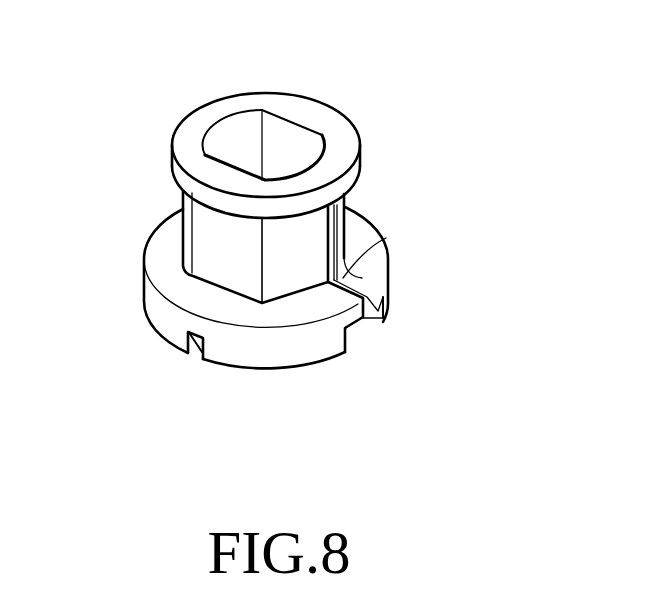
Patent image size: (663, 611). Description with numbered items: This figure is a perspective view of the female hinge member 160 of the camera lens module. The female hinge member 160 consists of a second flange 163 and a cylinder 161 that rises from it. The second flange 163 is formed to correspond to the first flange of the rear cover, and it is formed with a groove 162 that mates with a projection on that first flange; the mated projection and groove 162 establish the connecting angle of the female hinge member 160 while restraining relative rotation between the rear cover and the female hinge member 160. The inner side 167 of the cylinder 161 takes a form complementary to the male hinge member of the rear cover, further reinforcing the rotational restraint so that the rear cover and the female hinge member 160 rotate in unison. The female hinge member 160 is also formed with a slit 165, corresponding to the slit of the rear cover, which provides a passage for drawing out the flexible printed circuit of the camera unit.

The female hinge member 160 is at (191, 53).
The cylinder 161 is at (203, 232).
The groove 162 is at (200, 350).
The second flange 163 is at (320, 343).
The slit 165 is at (337, 240).
The inner side 167 is at (285, 147).